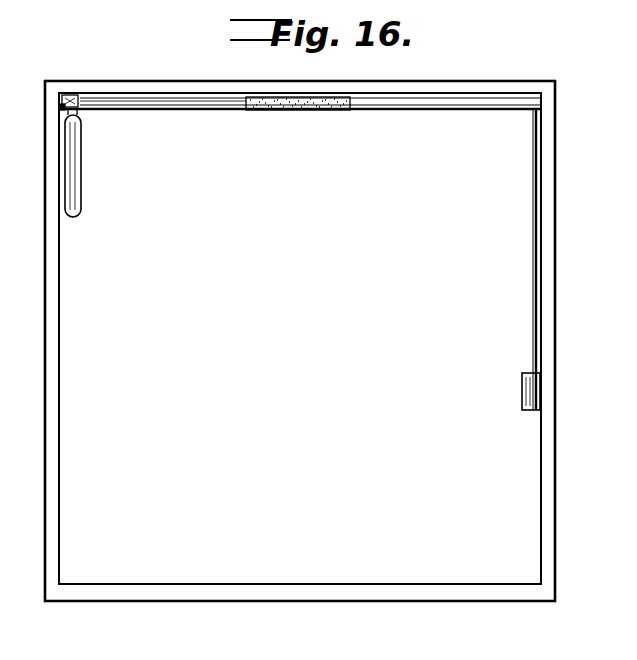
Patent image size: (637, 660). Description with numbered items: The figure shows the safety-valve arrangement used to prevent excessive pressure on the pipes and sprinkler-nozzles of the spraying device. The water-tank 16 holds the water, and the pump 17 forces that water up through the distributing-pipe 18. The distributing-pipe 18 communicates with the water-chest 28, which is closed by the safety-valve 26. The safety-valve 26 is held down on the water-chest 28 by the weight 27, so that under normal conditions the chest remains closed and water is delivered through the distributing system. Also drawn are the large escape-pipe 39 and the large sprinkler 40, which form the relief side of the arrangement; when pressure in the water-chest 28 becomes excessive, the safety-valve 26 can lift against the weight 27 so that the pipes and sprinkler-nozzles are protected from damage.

The water-tank 16 is at (48, 387).
The pump 17 is at (540, 412).
The distributing-pipe 18 is at (148, 112).
The safety-valve 26 is at (72, 94).
The weight 27 is at (82, 183).
The water-chest 28 is at (80, 107).
The large escape-pipe 39 is at (198, 100).
The large sprinkler 40 is at (298, 112).